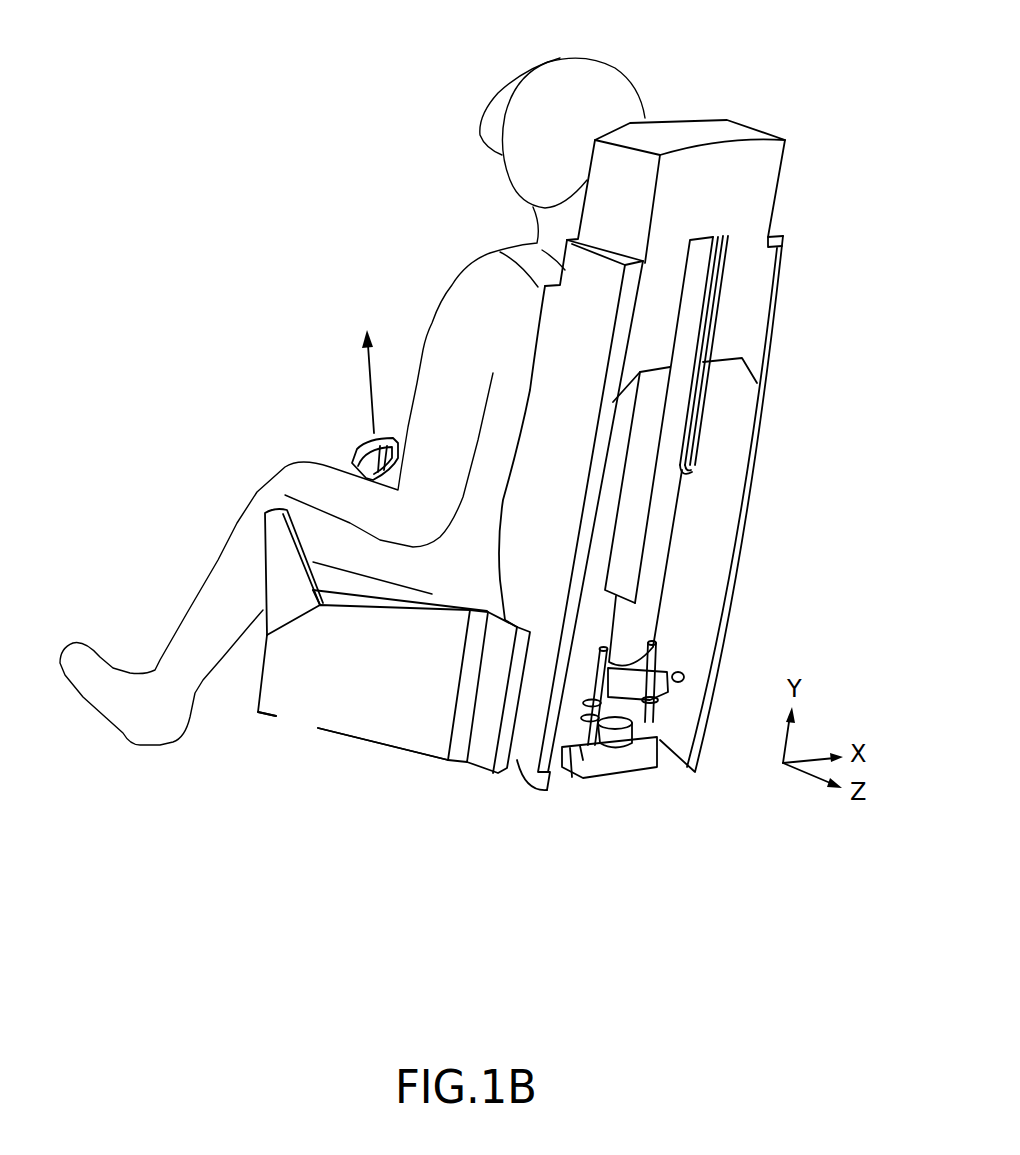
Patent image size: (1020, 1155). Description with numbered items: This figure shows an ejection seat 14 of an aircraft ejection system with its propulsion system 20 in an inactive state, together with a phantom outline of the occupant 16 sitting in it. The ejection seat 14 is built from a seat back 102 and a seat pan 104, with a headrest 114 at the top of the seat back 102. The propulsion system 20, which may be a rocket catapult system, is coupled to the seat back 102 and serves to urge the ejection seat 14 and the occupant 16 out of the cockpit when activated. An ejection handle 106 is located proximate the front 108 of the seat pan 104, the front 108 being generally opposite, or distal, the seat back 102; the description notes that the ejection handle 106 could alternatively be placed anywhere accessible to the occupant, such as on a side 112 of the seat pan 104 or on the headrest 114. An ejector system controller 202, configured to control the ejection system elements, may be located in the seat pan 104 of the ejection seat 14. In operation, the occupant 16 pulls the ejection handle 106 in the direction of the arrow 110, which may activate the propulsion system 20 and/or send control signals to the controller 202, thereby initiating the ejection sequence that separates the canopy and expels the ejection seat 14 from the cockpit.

The ejection seat 14 is at (770, 105).
The occupant 16 is at (634, 72).
The propulsion system 20 is at (705, 405).
The seat back 102 is at (658, 327).
The seat pan 104 is at (378, 755).
The ejection handle 106 is at (338, 450).
The front 108 is at (372, 592).
The arrow 110 is at (366, 365).
The side 112 is at (396, 684).
The headrest 114 is at (677, 130).
The controller 202 is at (320, 697).